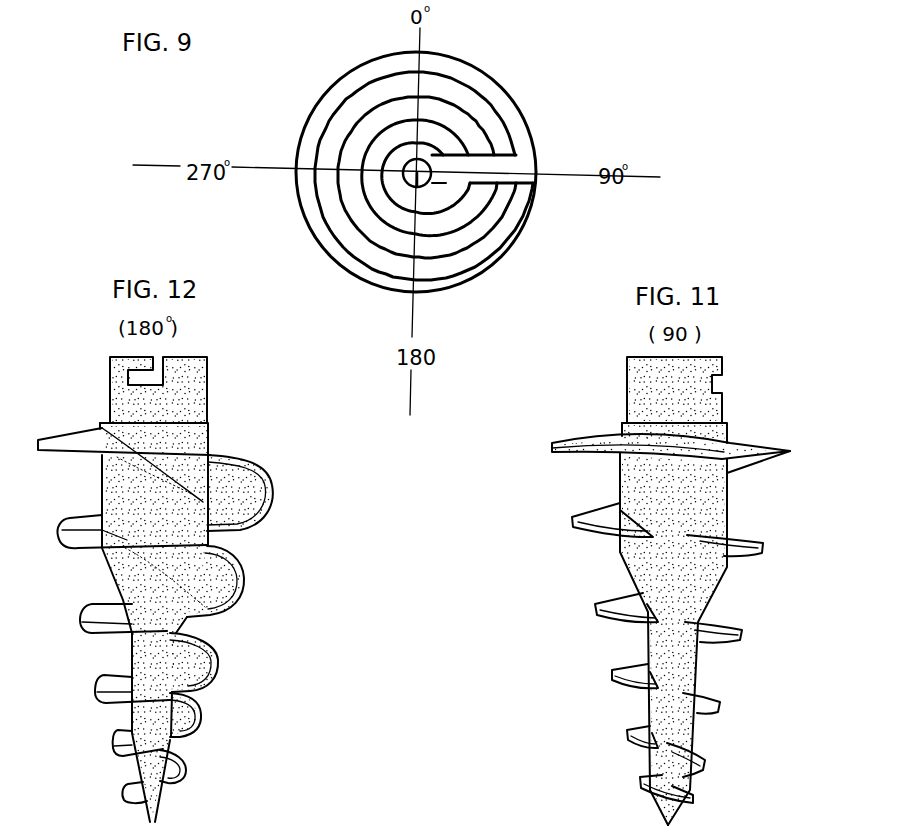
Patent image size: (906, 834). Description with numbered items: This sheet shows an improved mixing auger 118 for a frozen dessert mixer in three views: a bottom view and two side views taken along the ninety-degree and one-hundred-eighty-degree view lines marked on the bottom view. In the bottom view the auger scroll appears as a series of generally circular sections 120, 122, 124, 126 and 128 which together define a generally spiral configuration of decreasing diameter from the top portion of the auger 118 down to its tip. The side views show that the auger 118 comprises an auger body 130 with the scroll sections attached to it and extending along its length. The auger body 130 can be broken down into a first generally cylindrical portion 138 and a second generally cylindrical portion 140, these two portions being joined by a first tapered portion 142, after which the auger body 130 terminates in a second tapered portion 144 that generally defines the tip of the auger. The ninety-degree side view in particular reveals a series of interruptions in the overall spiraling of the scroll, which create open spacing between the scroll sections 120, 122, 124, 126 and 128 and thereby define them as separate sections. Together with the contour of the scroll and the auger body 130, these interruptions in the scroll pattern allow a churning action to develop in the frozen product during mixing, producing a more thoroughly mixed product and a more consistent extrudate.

In FIG. 9, the improved auger 118 is at (515, 71).
In FIG. 9, the scroll section 120 is at (500, 243).
In FIG. 12, the scroll section 120 is at (272, 478).
In FIG. 11, the scroll section 120 is at (552, 444).
In FIG. 9, the scroll section 122 is at (473, 250).
In FIG. 12, the scroll section 122 is at (244, 590).
In FIG. 11, the scroll section 122 is at (598, 606).
In FIG. 9, the scroll section 124 is at (427, 242).
In FIG. 12, the scroll section 124 is at (220, 650).
In FIG. 11, the scroll section 124 is at (612, 680).
In FIG. 9, the scroll section 126 is at (390, 222).
In FIG. 12, the scroll section 126 is at (203, 715).
In FIG. 11, the scroll section 126 is at (627, 738).
In FIG. 9, the scroll section 128 is at (387, 185).
In FIG. 12, the scroll section 128 is at (186, 776).
In FIG. 11, the scroll section 128 is at (641, 788).
In FIG. 11, the auger body 130 is at (773, 478).
In FIG. 11, the first generally cylindrical portion 138 is at (715, 500).
In FIG. 11, the second generally cylindrical portion 140 is at (688, 672).
In FIG. 11, the first tapered portion 142 is at (720, 567).
In FIG. 11, the second tapered portion 144 is at (684, 779).